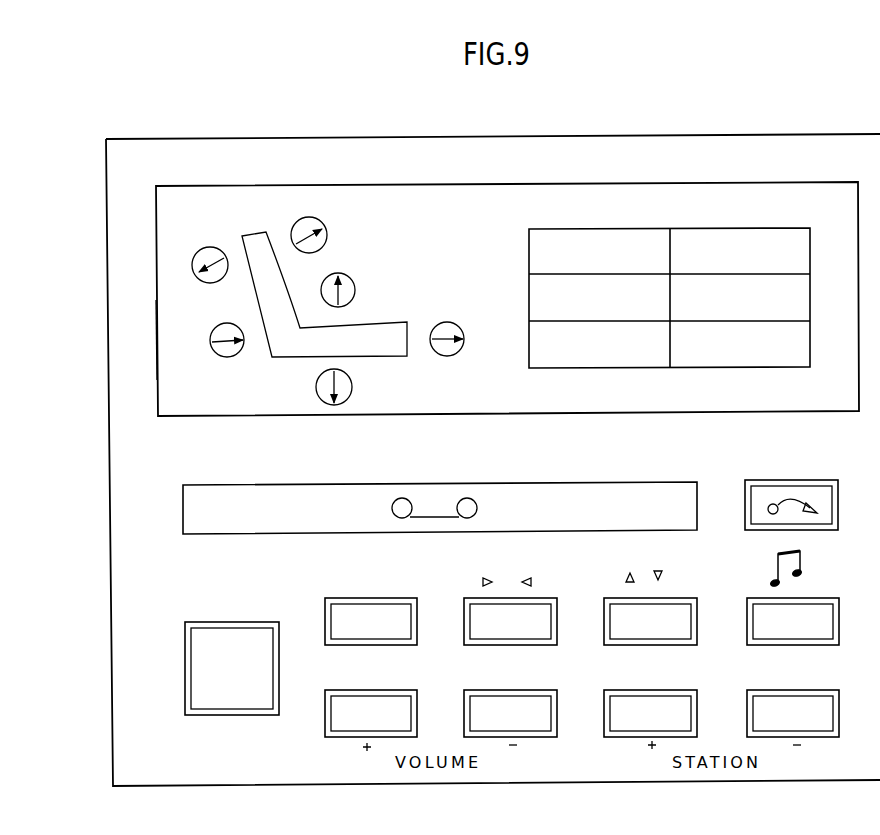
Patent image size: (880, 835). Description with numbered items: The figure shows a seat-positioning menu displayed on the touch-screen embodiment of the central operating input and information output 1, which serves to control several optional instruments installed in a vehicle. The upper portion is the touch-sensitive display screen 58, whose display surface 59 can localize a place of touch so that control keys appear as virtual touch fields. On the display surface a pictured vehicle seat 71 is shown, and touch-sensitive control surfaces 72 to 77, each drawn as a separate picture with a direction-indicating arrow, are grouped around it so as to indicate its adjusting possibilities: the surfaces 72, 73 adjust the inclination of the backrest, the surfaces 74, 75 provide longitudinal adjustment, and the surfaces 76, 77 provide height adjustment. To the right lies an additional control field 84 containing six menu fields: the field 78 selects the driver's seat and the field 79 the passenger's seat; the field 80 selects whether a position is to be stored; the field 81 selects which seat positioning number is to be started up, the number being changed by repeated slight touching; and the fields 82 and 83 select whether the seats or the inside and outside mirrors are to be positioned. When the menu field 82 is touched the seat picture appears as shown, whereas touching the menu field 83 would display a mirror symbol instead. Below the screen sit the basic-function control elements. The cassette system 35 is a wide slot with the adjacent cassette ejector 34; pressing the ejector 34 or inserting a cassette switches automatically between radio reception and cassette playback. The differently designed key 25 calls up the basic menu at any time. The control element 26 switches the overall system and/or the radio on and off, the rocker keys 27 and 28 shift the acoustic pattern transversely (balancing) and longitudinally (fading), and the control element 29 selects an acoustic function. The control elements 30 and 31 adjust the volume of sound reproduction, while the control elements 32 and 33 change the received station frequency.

The central operating input and information output 1 is at (549, 136).
The touch-sensitive display screen 58 is at (154, 292).
The display surface 59 is at (148, 338).
The pictured vehicle seat 71 is at (254, 229).
The touch-sensitive control surface for backrest inclining 72 is at (210, 246).
The touch-sensitive control surface for backrest inclining 73 is at (328, 233).
The touch-sensitive control surface for longitudinal adjustment 74 is at (213, 330).
The touch-sensitive control surface for longitudinal adjustment 75 is at (447, 321).
The touch-sensitive control surface for height adjustment 76 is at (356, 286).
The touch-sensitive control surface for height adjustment 77 is at (353, 387).
The driver's seat menu field 78 is at (528, 258).
The passenger's seat menu field 79 is at (811, 250).
The position storing menu field 80 is at (528, 306).
The seat positioning number menu field 81 is at (811, 300).
The seat menu field 82 is at (528, 350).
The mirror menu field 83 is at (811, 346).
The additional control field 84 is at (651, 227).
The cassette system 35 is at (418, 490).
The cassette ejector 34 is at (795, 490).
The basic menu key 25 is at (230, 696).
The on/off control element 26 is at (335, 622).
The balance rocker key 27 is at (474, 620).
The fading rocker key 28 is at (614, 620).
The acoustic function control element 29 is at (757, 618).
The volume control element 30 is at (342, 713).
The volume control element 31 is at (480, 713).
The station control element 32 is at (620, 713).
The station control element 33 is at (757, 712).